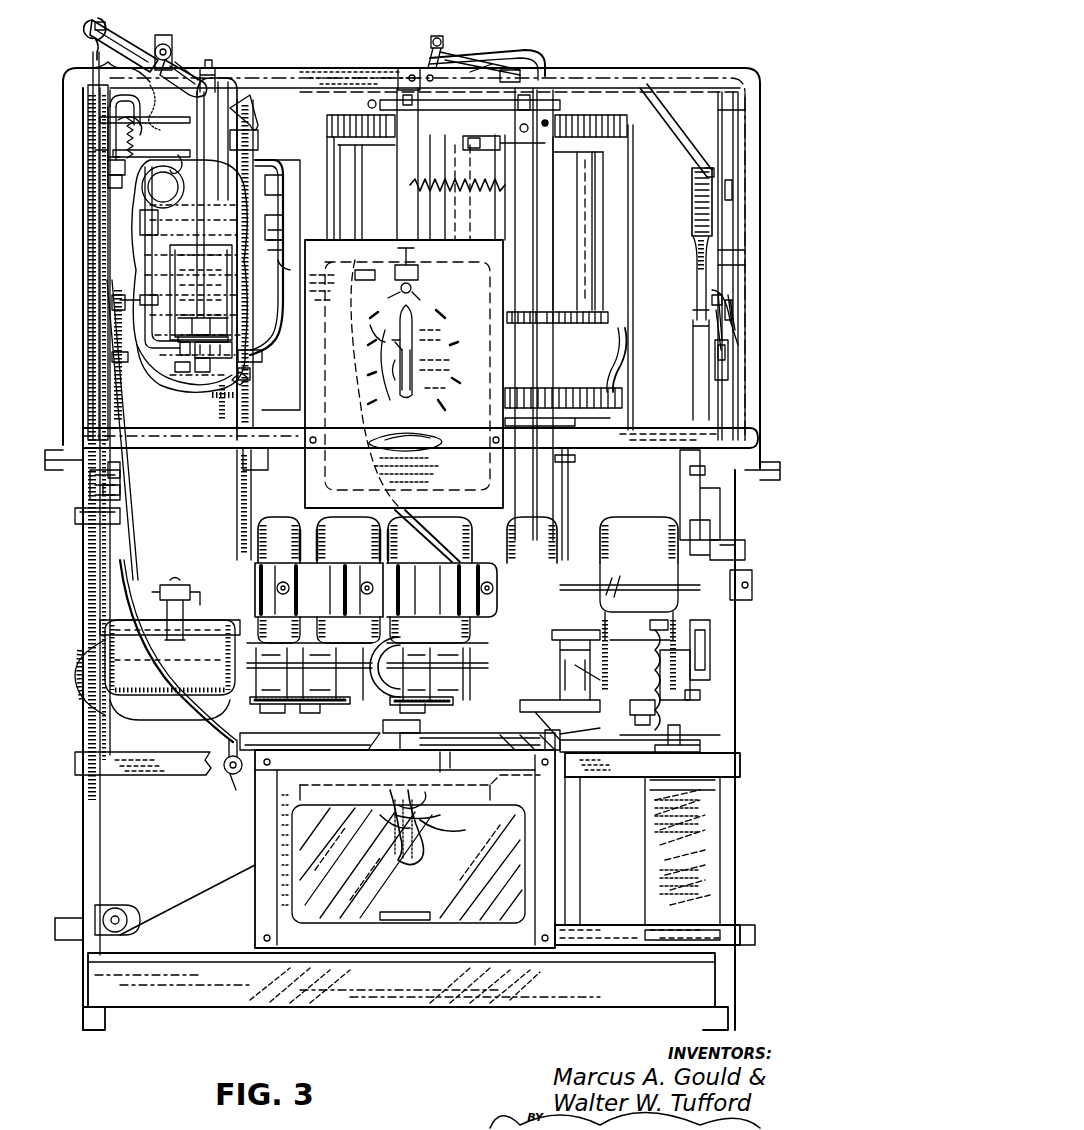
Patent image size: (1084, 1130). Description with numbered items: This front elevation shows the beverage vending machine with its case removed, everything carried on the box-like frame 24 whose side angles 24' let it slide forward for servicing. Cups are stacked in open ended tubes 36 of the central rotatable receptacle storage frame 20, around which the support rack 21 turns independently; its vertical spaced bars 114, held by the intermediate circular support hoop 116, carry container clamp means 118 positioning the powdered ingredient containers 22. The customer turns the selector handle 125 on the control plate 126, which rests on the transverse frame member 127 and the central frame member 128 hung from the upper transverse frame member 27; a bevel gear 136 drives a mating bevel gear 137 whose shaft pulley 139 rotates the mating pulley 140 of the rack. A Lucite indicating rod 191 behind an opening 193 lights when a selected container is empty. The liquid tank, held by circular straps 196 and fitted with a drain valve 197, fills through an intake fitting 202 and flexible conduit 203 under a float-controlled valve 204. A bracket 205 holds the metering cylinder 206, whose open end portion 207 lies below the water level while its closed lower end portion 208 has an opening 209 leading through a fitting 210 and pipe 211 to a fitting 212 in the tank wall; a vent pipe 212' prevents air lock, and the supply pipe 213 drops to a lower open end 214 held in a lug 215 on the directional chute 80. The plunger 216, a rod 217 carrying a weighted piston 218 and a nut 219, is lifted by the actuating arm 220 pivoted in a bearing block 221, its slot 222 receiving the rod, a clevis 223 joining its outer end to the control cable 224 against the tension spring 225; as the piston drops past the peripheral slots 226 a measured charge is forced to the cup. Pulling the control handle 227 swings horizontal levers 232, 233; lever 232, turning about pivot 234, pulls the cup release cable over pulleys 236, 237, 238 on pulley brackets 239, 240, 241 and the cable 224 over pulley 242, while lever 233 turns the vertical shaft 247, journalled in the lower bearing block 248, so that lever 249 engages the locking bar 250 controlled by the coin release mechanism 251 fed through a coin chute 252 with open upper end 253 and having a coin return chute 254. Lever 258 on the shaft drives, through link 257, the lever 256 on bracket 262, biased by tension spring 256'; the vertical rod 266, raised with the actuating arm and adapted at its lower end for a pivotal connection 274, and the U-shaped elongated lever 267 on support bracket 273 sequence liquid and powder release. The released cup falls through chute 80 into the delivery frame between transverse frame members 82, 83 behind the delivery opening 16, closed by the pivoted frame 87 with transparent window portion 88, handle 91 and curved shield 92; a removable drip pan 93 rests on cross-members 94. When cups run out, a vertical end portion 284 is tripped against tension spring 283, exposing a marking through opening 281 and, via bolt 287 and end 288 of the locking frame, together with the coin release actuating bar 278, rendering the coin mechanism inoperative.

The lower delivery opening 16 is at (277, 812).
The receptacle storage frame 20 is at (618, 320).
The support rack 21 is at (640, 265).
The containers 22 is at (629, 518).
The frame 24 is at (430, 549).
The horizontally disposed angles 24' is at (413, 699).
The transverse angular frame member 27 is at (358, 70).
The vertical open ended tubes 36 is at (608, 196).
The directional chute 80 is at (540, 795).
The transverse frame member 82 is at (690, 773).
The transverse frame member 83 is at (650, 938).
The vertically rotatable frame 87 is at (548, 851).
The transparent front window portion 88 is at (298, 899).
The handle 91 is at (400, 922).
The curved shield 92 is at (500, 818).
The removable drip pan 93 is at (362, 994).
The cross-members 94 is at (108, 1018).
The vertical spaced bars 114 is at (622, 350).
The intermediate circular support hoop 116 is at (622, 398).
The container clamp means 118 is at (412, 594).
The selector handle 125 is at (386, 398).
The control plate 126 is at (310, 392).
The transverse frame member 127 is at (756, 438).
The central frame member 128 is at (390, 143).
The bevel gear 136 is at (425, 365).
The mating bevel gear 137 is at (397, 375).
The pulley 139 is at (368, 105).
The mating pulley 140 is at (535, 112).
The Lucite indicating rod 191 is at (365, 468).
The opening 193 is at (428, 303).
The circular straps 196 is at (157, 535).
The drain valve 197 is at (192, 590).
The intake fitting 202 is at (266, 168).
The flexible conduit 203 is at (297, 250).
The float-controlled valve 204 is at (232, 115).
The bracket 205 is at (140, 330).
The metering cylinder 206 is at (135, 360).
The open end portion 207 is at (135, 240).
The closed lower end portion 208 is at (255, 356).
The opening 209 is at (252, 376).
The fitting 210 is at (180, 390).
The pipe 211 is at (170, 285).
The fitting 212 is at (70, 169).
The vent pipe 212' is at (78, 128).
The supply pipe 213 is at (125, 517).
The lower open end 214 is at (438, 752).
The lug 215 is at (398, 812).
The plunger 216 is at (248, 80).
The rod 217 is at (203, 153).
The weighted piston 218 is at (185, 370).
The nut 219 is at (214, 66).
The actuating arm 220 is at (120, 34).
The bearing block 221 is at (166, 46).
The slot 222 is at (190, 68).
The clevis 223 is at (84, 40).
The control cable 224 is at (88, 106).
The tension spring 225 is at (77, 74).
The peripheral slots 226 is at (135, 310).
The control handle 227 is at (445, 438).
The horizontal lever 232 is at (294, 428).
The horizontal lever 233 is at (610, 421).
The pivot 234 is at (260, 458).
The pulley 236 is at (118, 488).
The pulley 237 is at (126, 912).
The pulley 238 is at (565, 696).
The pulley bracket 239 is at (120, 470).
The pulley bracket 240 is at (108, 905).
The pulley bracket 241 is at (555, 637).
The pulley 242 is at (90, 493).
The vertical shaft 247 is at (570, 475).
The lower bearing block 248 is at (562, 744).
The lever 249 is at (612, 606).
The locking bar 250 is at (745, 548).
The coin release mechanism 251 is at (718, 512).
The coin chute 252 is at (695, 287).
The open upper end 253 is at (692, 216).
The coin return chute 254 is at (700, 696).
The lever 256 is at (628, 675).
The tension spring 256' is at (722, 690).
The link 257 is at (685, 735).
The lever 258 is at (632, 730).
The bracket 262 is at (590, 782).
The vertical rod 266 is at (252, 486).
The elongated lever 267 is at (228, 748).
The support bracket 273 is at (297, 738).
The fitting 274 is at (232, 776).
The coin release actuating bar 278 is at (728, 293).
The opening 281 is at (410, 256).
The tension spring 283 is at (460, 160).
The vertical end portion 284 is at (547, 144).
The bolt 287 is at (440, 40).
The end 288 is at (492, 52).